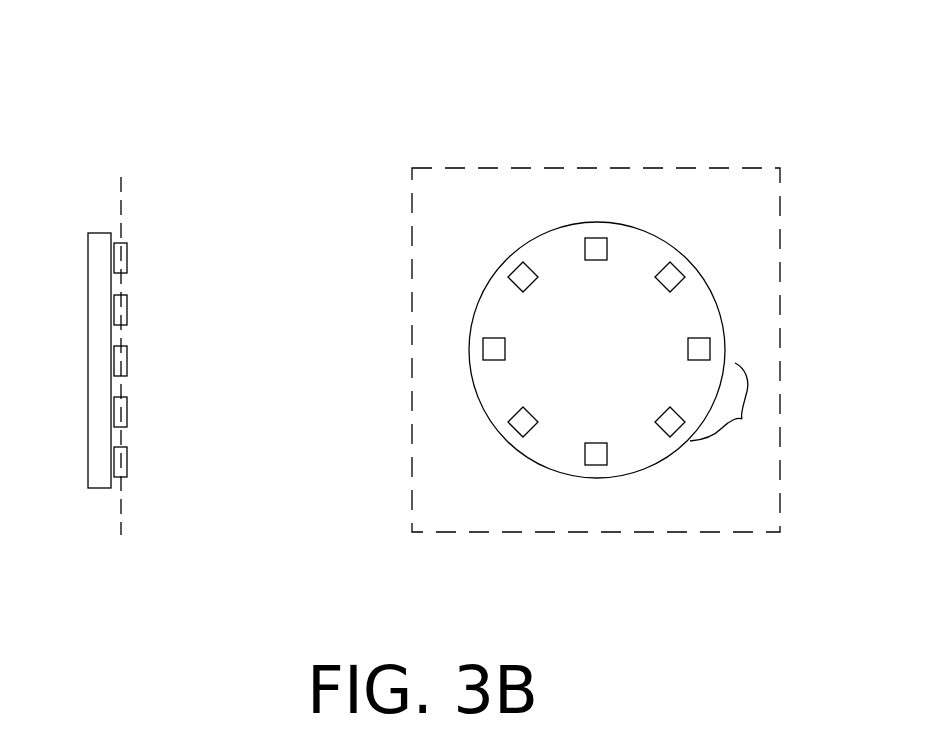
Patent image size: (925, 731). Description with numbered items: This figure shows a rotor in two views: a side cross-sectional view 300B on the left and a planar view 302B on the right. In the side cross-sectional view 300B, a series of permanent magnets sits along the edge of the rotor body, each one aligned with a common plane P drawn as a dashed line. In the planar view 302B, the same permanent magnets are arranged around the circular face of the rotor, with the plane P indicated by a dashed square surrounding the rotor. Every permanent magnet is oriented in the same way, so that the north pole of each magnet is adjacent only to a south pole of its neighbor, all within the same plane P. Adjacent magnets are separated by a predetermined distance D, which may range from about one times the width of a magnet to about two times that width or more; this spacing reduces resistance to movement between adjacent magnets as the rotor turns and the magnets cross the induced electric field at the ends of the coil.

The side cross-sectional view 300B is at (145, 132).
The planar view 302B is at (620, 91).
The plane P is at (785, 115).
The predetermined distance D is at (742, 419).